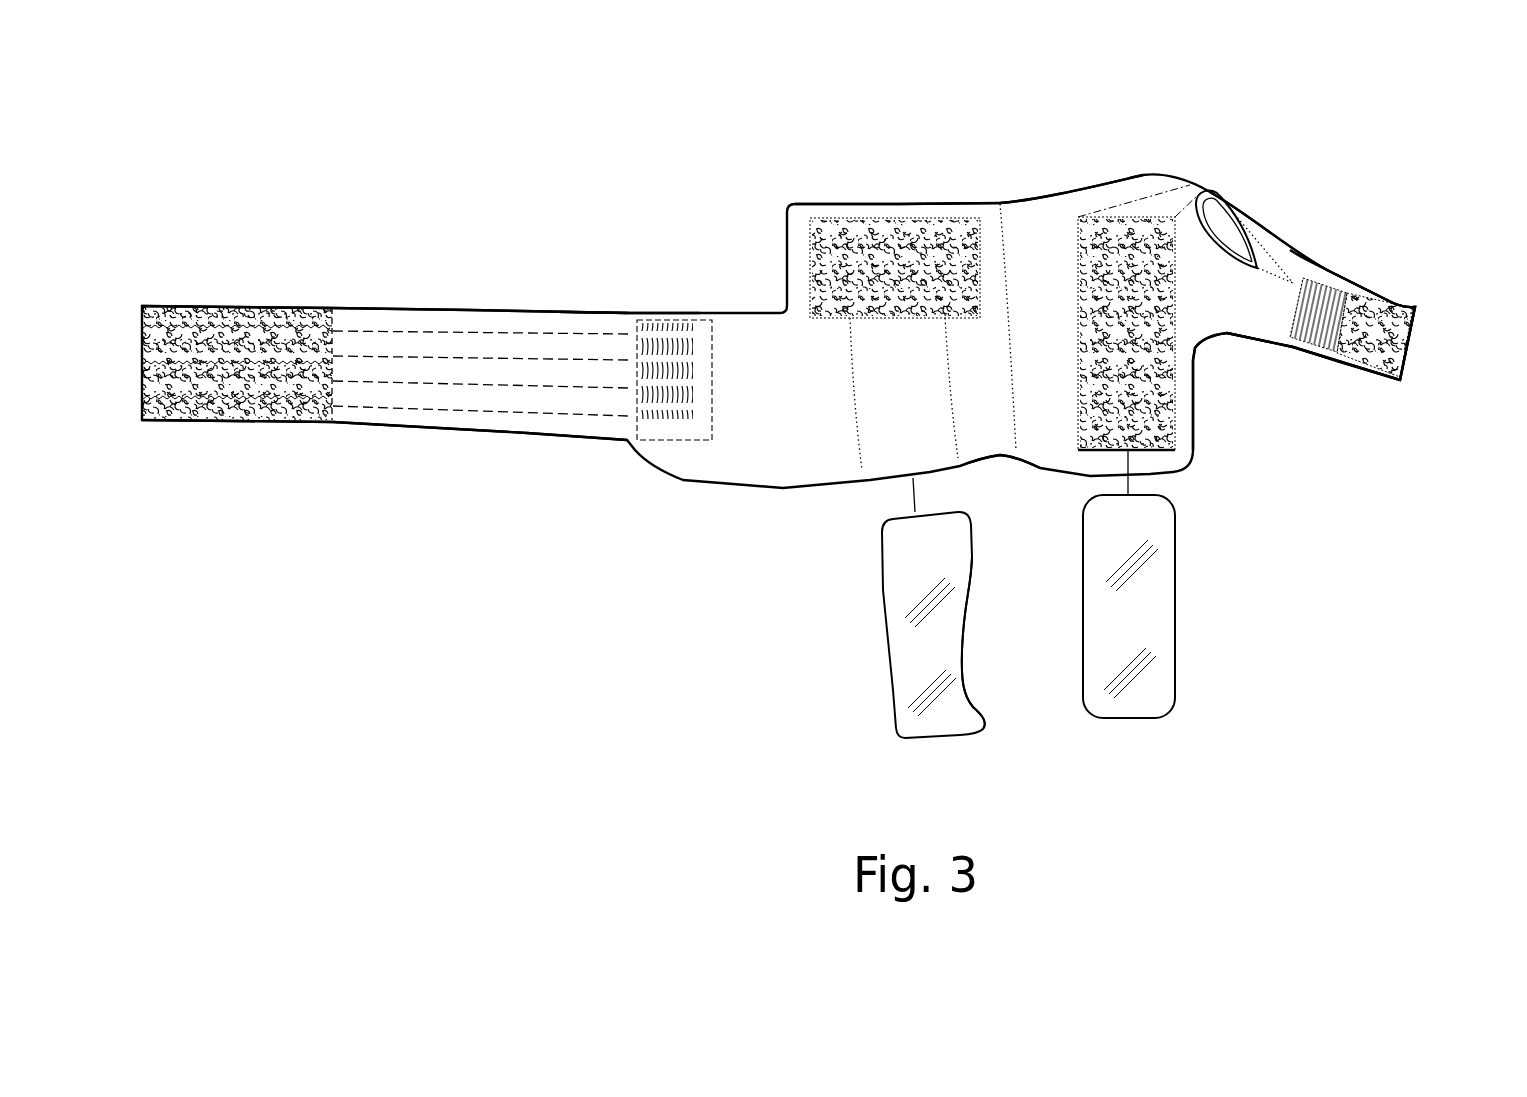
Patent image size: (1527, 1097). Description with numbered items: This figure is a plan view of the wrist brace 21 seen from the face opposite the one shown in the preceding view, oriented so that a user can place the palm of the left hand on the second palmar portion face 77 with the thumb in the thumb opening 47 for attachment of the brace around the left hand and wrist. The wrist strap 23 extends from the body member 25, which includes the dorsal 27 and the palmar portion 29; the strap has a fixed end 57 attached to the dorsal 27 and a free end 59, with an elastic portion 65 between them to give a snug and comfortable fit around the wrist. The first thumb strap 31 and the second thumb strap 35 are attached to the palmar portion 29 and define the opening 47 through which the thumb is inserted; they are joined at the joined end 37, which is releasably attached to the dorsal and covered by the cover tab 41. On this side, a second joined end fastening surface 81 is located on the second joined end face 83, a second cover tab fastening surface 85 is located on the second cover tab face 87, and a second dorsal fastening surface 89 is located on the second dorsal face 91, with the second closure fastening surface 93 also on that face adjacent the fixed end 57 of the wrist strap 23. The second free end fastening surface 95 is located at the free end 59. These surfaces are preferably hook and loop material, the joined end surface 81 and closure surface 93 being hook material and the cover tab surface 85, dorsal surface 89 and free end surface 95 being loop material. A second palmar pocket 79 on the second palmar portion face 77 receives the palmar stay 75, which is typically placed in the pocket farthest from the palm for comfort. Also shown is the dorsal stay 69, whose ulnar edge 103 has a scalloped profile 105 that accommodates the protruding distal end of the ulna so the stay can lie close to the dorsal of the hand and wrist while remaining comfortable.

The wrist brace 21 is at (732, 174).
The wrist strap 23 is at (468, 275).
The body member 25 is at (1004, 144).
The dorsal 27 is at (926, 188).
The palmar portion 29 is at (1074, 178).
The first thumb strap 31 is at (1270, 260).
The second thumb strap 35 is at (1195, 322).
The joined end 37 is at (1344, 265).
The cover tab 41 is at (1395, 285).
The opening 47 is at (1223, 238).
The fixed end 57 is at (609, 296).
The free end 59 is at (243, 293).
The elastic portion 65 is at (507, 393).
The dorsal stay 69 is at (903, 640).
The palmar stay 75 is at (1127, 615).
The second palmar portion face 77 is at (1065, 428).
The second palmar pocket 79 is at (1157, 455).
The second joined end fastening surface 81 is at (1292, 323).
The second joined end face 83 is at (1310, 350).
The second cover tab fastening surface 85 is at (1410, 353).
The second cover tab face 87 is at (1371, 380).
The second dorsal fastening surface 89 is at (905, 240).
The second dorsal face 91 is at (853, 437).
The second closure fastening surface 93 is at (687, 422).
The second free end fastening surface 95 is at (240, 380).
The ulnar edge 103 is at (979, 627).
The scalloped profile 105 is at (967, 677).